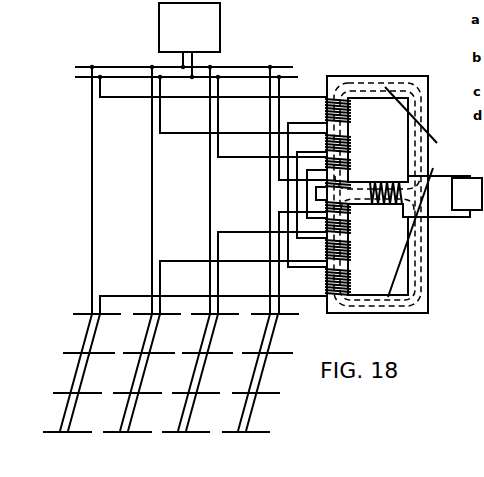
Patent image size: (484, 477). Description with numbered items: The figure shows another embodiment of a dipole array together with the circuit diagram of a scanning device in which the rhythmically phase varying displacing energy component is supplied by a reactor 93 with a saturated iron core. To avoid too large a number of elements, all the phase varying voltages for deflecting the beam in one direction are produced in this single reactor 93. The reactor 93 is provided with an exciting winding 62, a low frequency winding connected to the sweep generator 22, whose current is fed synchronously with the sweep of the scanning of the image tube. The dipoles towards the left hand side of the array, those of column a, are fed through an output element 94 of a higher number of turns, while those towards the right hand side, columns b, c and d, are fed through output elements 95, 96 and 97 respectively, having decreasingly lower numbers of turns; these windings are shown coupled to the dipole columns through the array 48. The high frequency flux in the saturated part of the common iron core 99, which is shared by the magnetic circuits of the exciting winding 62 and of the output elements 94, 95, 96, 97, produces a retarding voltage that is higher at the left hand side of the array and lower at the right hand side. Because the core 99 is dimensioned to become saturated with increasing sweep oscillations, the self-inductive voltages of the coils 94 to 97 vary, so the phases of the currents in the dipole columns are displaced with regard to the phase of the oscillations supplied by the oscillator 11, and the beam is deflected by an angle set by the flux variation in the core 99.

The oscillator 11 is at (198, 35).
The sweep generator 22 is at (474, 202).
The switching matrix 48 is at (177, 380).
The exciting winding 62 is at (374, 182).
The reactor 93 is at (428, 163).
The output element 94 is at (327, 110).
The output element 95 is at (327, 141).
The output element 96 is at (346, 163).
The output element 97 is at (343, 179).
The common iron core 99 is at (417, 103).